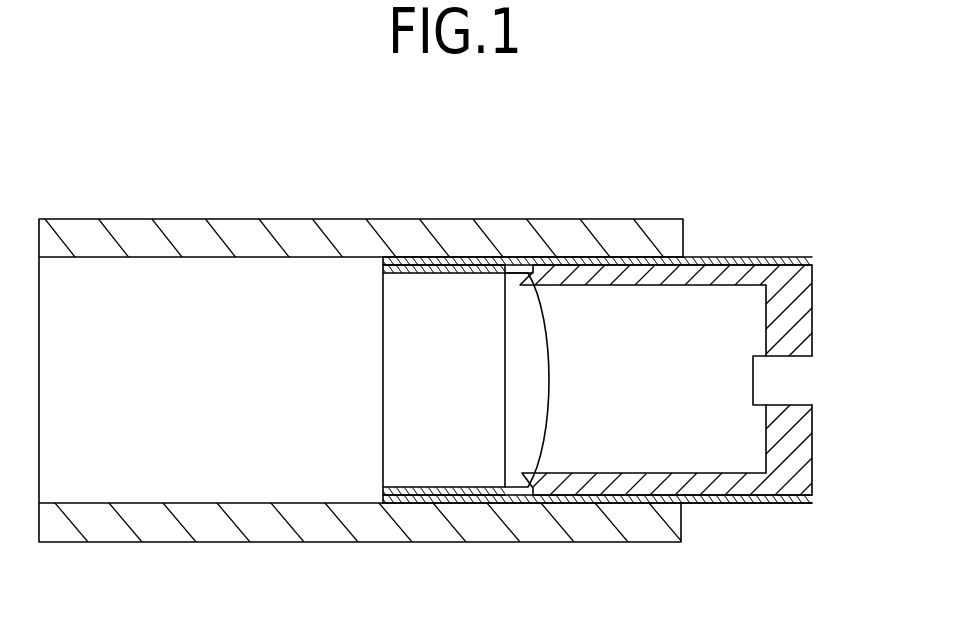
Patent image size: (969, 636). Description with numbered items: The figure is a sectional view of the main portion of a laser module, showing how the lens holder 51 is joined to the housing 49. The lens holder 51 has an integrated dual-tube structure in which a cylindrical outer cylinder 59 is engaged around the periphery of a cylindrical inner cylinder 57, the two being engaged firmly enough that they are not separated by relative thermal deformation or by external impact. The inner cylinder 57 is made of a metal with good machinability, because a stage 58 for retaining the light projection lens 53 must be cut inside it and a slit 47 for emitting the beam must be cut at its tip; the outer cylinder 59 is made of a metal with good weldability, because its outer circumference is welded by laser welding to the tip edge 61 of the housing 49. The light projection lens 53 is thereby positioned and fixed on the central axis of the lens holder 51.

The slit 47 is at (792, 360).
The housing 49 is at (145, 219).
The lens holder 51 is at (700, 234).
The light projection lens 53 is at (513, 448).
The inner cylinder 57 is at (626, 480).
The stage 58 is at (505, 300).
The outer cylinder 59 is at (460, 257).
The tip edge 61 is at (685, 510).